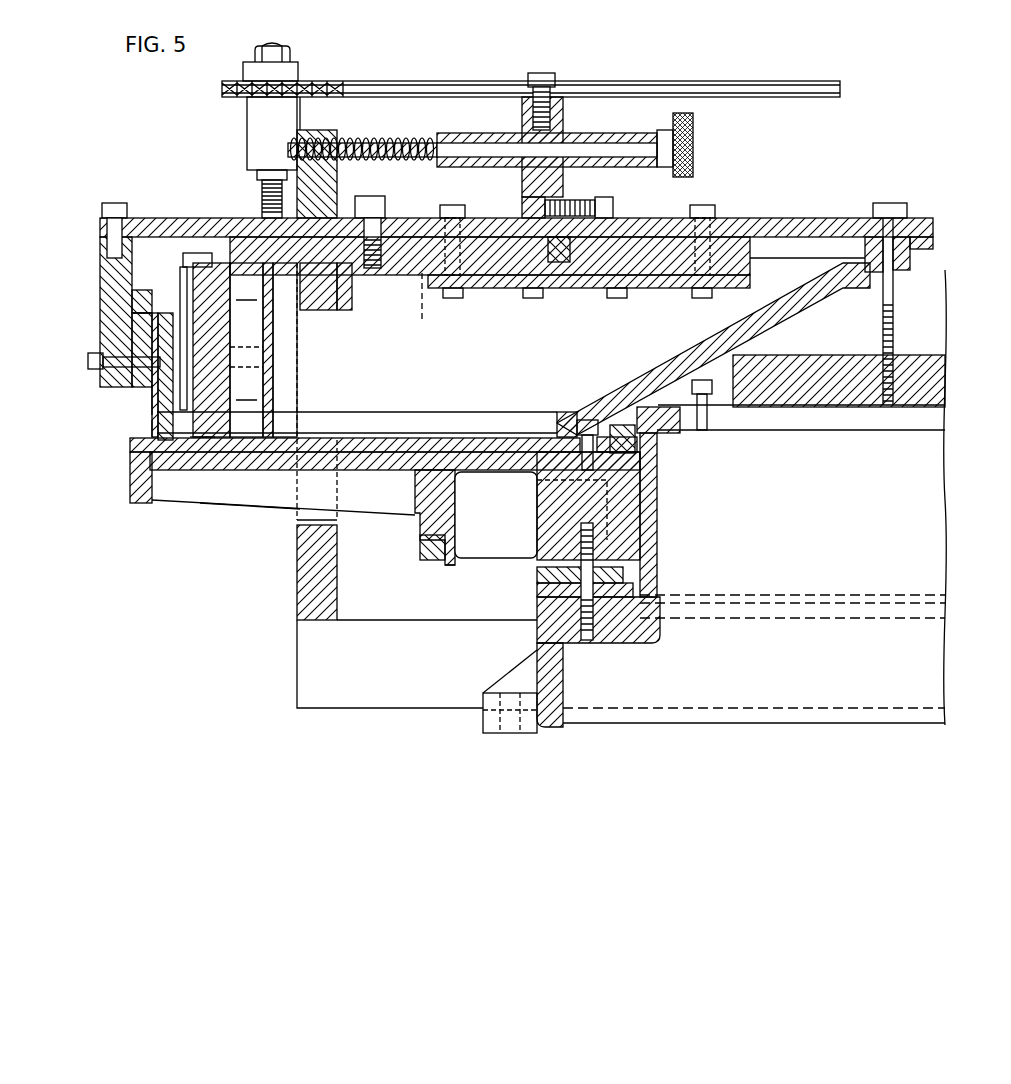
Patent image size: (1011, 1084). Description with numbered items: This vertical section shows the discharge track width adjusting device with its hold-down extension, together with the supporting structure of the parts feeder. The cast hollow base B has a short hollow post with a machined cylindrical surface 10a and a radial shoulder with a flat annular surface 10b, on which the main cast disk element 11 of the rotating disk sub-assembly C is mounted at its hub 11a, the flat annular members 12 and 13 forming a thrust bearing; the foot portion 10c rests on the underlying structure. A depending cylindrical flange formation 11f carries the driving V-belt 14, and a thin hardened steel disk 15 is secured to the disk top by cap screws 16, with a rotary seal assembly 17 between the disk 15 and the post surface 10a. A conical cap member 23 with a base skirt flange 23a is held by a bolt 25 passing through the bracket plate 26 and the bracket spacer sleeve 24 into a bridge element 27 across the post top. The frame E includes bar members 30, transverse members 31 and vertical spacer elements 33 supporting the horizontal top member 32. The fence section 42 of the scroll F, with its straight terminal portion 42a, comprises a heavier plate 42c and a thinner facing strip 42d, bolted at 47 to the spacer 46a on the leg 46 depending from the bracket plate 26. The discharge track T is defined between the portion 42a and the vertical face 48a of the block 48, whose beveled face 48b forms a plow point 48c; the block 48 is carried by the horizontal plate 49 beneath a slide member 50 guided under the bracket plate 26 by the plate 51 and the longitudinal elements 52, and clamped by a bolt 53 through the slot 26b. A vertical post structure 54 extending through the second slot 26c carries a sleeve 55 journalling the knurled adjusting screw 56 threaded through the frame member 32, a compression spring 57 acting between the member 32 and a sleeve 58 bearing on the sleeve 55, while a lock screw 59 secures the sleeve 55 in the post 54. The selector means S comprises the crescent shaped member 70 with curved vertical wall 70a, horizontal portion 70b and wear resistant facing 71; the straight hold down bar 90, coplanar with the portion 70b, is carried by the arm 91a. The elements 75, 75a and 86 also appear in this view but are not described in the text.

The cylindrical surface 10a is at (648, 519).
The flat annular surface 10b is at (640, 597).
The foot portion 10c is at (493, 733).
The disk element 11 is at (160, 513).
The hub 11a is at (540, 540).
The cylindrical flange formation 11f is at (445, 562).
The flat annular member 12 is at (540, 582).
The flat annular member 13 is at (540, 595).
The driving V-belt 14 is at (420, 545).
The hardened steel disk 15 is at (476, 440).
The cap screws 16 is at (585, 420).
The rotary seal assembly 17 is at (622, 425).
The conical cap member 23 is at (695, 340).
The base skirt flange 23a is at (557, 420).
The bracket spacer sleeve 24 is at (920, 240).
The bolt 25 is at (890, 203).
The bracket plate 26 is at (820, 218).
The longitudinal slot 26b is at (425, 218).
The second longitudinal slot 26c is at (670, 218).
The bridge element 27 is at (800, 410).
The bar members 30 is at (360, 708).
The transverse members 31 is at (297, 600).
The vertical spacer elements 33 is at (297, 525).
The horizontal top member 32 is at (337, 183).
The fence section 42 is at (142, 346).
The terminal portion 42a is at (142, 398).
The curved metal plate 42c is at (152, 430).
The facing strip 42d is at (152, 408).
The leg 46 is at (100, 255).
The spacer 46a is at (140, 376).
The bolt 47 is at (88, 362).
The block 48 is at (224, 332).
The vertical face 48a is at (263, 349).
The vertical face 48b is at (268, 370).
The plow point 48c is at (250, 350).
The horizontal plate 49 is at (352, 300).
The slide member 50 is at (386, 285).
The plate 51 is at (483, 288).
The longitudinal elements 52 is at (436, 307).
The bolt 53 is at (385, 197).
The vertical post structure 54 is at (563, 182).
The sleeve 55 is at (598, 133).
The adjusting screw 56 is at (693, 135).
The compression spring 57 is at (385, 138).
The sleeve 58 is at (460, 140).
The lock screw 59 is at (548, 73).
The selector member 70 is at (254, 452).
The curved vertical wall 70a is at (273, 328).
The horizontal portion 70b is at (330, 383).
The wear resistant facing 71 is at (330, 400).
The bolt 75 is at (282, 47).
The bolt stem 75a is at (262, 208).
The bar 86 is at (790, 81).
The hold down bar 90 is at (132, 300).
The arm 91a is at (185, 270).
The frame E is at (272, 195).
The fence structure F is at (132, 326).
The part selecting means S is at (830, 241).
The discharge track structure T is at (204, 451).
The rotating disk sub-assembly C is at (246, 522).
The base B is at (476, 703).